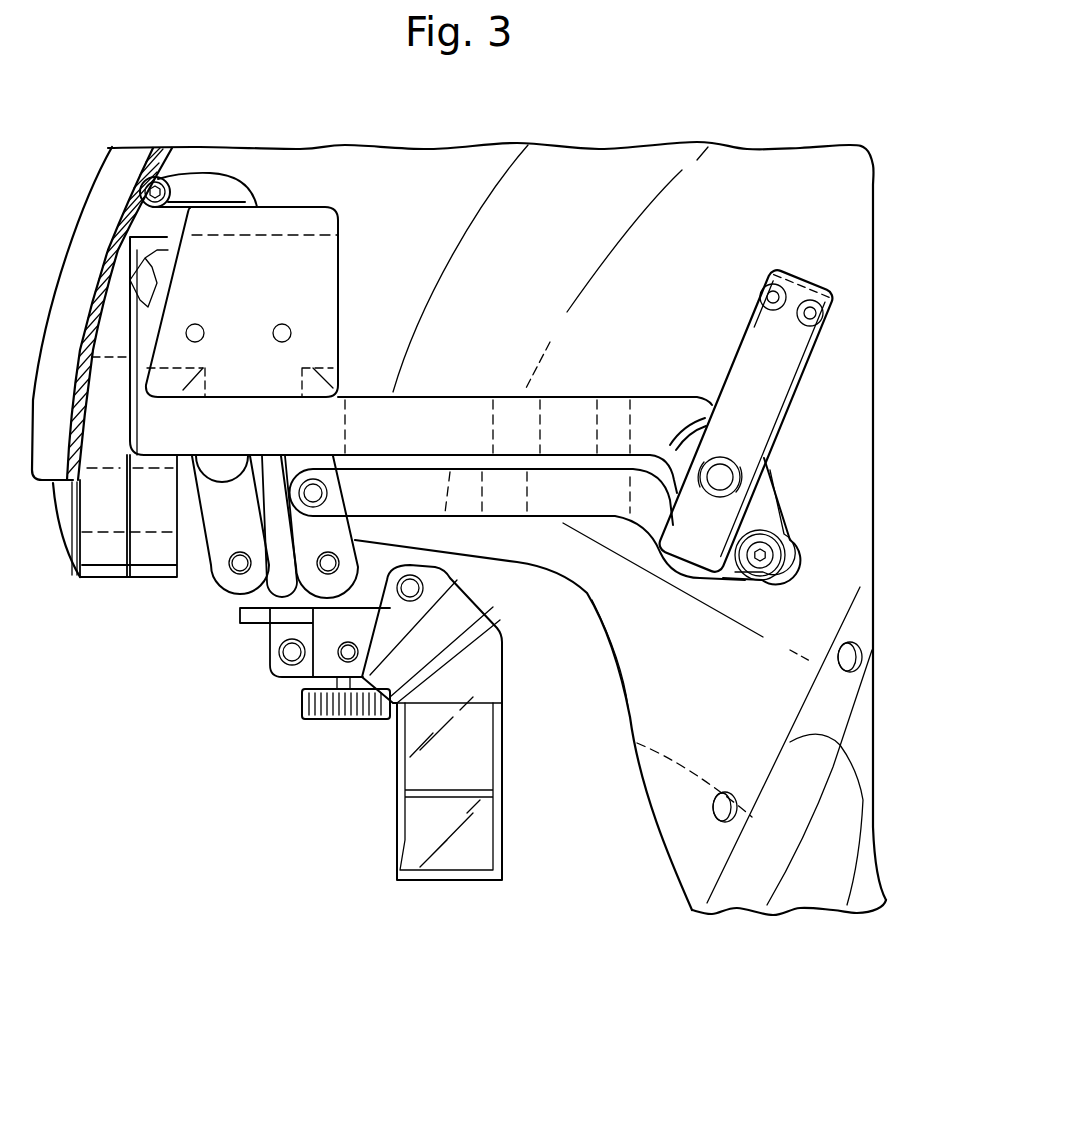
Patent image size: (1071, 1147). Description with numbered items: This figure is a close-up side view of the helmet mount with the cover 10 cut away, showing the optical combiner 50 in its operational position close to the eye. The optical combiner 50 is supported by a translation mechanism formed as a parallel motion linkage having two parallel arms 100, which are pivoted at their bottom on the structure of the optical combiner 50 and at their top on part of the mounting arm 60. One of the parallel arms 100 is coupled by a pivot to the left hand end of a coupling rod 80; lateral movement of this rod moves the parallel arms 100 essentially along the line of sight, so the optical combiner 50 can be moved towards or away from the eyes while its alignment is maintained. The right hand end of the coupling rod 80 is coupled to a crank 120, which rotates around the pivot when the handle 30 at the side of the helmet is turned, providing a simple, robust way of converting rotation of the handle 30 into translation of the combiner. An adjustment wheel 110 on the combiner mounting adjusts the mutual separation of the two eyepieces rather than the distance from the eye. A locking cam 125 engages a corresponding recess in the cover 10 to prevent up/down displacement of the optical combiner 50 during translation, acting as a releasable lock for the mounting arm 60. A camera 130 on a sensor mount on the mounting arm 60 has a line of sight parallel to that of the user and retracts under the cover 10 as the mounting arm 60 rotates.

The cover 10 is at (97, 208).
The handle 30 is at (777, 375).
The optical combiner 50 is at (462, 858).
The mounting arm 60 is at (310, 260).
The coupling rod 80 is at (556, 500).
The parallel arms 100 is at (218, 535).
The adjustment wheel 110 is at (345, 720).
The crank 120 is at (768, 557).
The locking cam 125 is at (205, 200).
The camera 130 is at (100, 555).